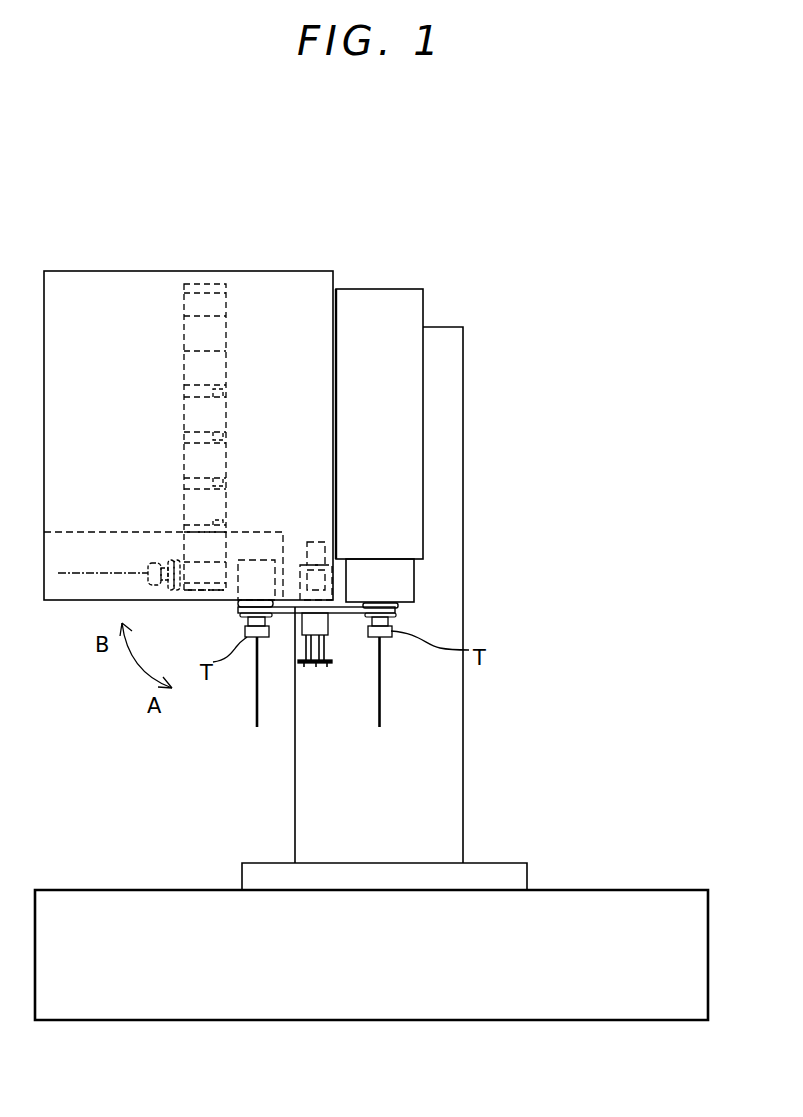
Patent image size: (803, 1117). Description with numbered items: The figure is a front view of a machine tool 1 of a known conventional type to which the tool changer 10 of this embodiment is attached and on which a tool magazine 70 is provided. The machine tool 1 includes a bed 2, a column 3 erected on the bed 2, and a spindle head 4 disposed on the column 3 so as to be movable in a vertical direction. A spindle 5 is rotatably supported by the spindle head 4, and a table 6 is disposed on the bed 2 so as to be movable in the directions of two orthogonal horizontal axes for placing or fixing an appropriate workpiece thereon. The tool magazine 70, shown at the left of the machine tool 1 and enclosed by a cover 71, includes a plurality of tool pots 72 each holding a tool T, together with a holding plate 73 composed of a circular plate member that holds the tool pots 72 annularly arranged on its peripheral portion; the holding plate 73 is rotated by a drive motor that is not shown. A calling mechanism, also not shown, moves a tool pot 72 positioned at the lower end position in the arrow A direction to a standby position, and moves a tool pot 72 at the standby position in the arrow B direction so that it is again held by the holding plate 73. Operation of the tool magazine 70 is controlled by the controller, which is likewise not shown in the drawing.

The machine tool 1 is at (580, 234).
The bed 2 is at (612, 893).
The column 3 is at (456, 398).
The spindle head 4 is at (398, 289).
The spindle 5 is at (410, 583).
The table 6 is at (518, 863).
The tool changer 10 is at (300, 667).
The tool magazine 70 is at (188, 378).
The cover 71 is at (119, 270).
The tool pot 72 is at (190, 412).
The holding plate 73 is at (222, 440).